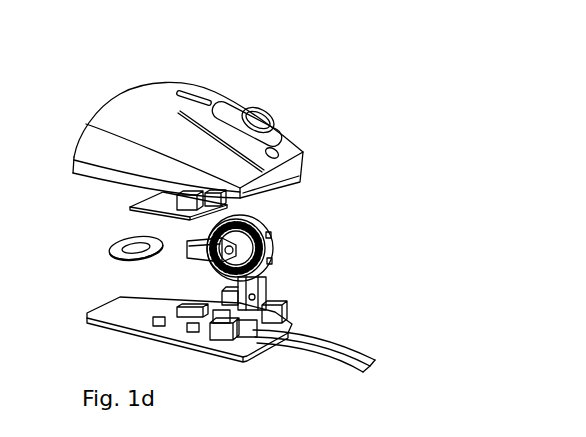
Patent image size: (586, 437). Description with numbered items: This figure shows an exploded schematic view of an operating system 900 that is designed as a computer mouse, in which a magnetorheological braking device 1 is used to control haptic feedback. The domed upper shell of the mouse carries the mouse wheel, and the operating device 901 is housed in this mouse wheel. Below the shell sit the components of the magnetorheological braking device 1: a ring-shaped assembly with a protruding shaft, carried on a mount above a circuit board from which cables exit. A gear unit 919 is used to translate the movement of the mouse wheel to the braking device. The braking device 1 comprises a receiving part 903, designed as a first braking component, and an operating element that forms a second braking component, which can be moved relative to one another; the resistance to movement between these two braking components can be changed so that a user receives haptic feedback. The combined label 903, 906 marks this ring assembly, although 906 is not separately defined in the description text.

The operating system 900 is at (80, 98).
The operating device 901 is at (255, 78).
The receiving part 903 is at (283, 227).
The rotary actuator ring 906 is at (240, 248).
The gear unit 919 is at (280, 208).
The magnetorheological braking device 1 is at (292, 255).